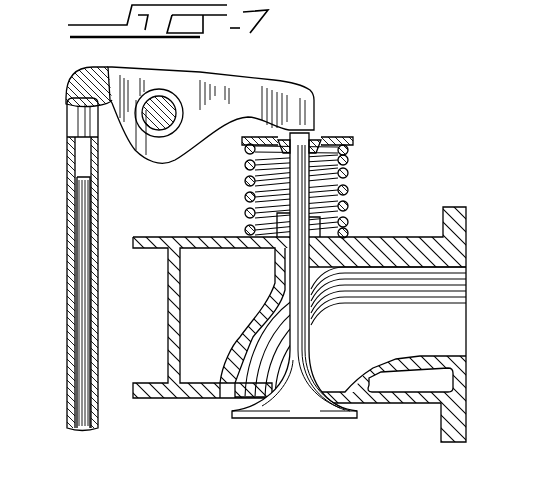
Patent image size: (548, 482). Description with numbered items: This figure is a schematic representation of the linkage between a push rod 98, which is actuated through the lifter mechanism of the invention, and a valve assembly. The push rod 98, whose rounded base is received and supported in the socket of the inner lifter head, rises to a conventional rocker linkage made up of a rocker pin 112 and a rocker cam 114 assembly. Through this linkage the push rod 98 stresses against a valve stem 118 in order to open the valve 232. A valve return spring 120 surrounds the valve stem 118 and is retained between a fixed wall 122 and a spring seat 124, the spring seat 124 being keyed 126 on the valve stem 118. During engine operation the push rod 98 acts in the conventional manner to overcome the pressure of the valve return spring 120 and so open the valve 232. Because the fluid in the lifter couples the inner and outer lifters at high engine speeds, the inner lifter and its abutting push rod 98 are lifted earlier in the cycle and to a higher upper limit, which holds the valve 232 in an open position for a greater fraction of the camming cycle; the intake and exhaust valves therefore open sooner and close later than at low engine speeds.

The push rod 98 is at (68, 316).
The rocker pin 112 is at (161, 117).
The rocker cam 114 is at (248, 90).
The valve stem 118 is at (300, 262).
The valve return spring 120 is at (346, 172).
The fixed wall 122 is at (402, 247).
The spring seat 124 is at (347, 138).
The key 126 is at (310, 143).
The valve 232 is at (245, 400).